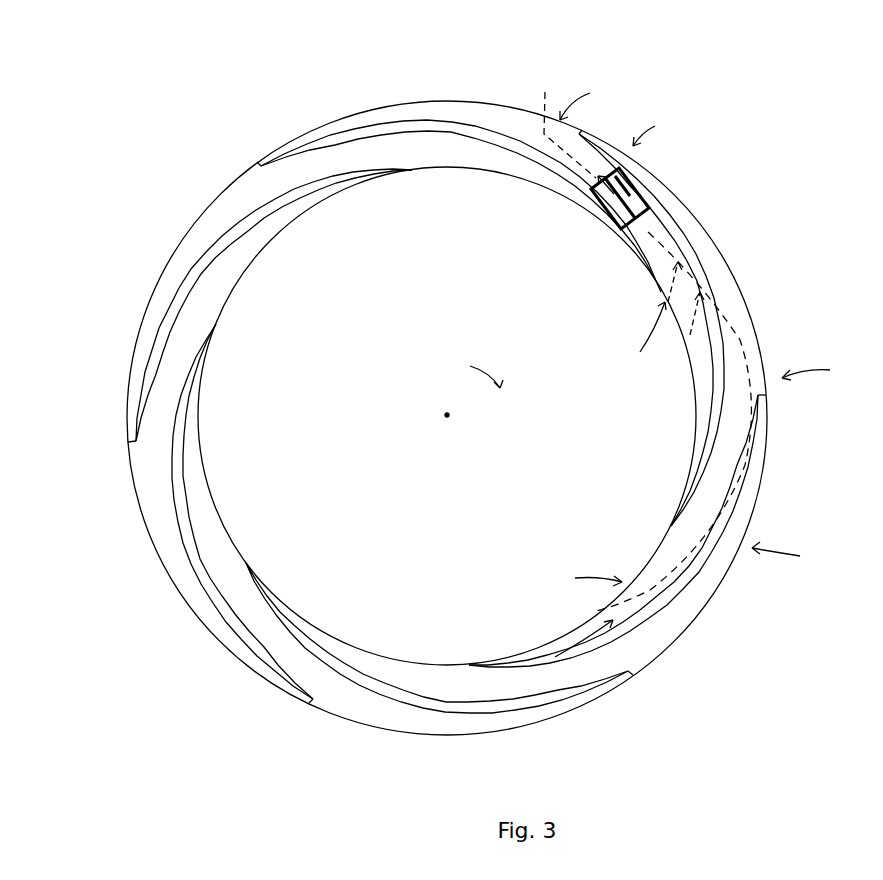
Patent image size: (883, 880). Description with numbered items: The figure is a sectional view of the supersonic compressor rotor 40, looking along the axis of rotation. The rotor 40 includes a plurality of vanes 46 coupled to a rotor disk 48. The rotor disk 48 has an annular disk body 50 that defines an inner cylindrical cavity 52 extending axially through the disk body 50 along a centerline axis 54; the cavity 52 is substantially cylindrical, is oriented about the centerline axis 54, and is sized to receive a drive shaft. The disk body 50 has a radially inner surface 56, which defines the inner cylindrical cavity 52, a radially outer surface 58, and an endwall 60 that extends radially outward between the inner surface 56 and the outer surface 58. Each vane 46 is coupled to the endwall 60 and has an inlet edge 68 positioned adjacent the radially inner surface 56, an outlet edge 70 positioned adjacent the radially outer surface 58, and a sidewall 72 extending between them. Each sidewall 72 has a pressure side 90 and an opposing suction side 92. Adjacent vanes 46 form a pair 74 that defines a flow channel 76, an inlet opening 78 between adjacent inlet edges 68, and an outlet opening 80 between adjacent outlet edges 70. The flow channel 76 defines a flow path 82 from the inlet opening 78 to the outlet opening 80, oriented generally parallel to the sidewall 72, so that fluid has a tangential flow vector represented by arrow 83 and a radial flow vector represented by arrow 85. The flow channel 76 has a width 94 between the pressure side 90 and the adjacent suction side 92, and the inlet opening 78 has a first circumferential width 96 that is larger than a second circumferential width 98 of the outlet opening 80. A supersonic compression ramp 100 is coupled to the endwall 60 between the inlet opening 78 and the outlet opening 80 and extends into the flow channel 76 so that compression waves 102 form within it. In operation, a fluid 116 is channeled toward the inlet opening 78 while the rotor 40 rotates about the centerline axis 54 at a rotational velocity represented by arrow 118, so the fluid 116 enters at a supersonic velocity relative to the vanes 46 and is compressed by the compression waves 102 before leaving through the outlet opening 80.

The supersonic compressor rotor 40 is at (625, 66).
The vane 46 is at (306, 143).
The rotor disk 48 is at (395, 722).
The annular disk body 50 is at (478, 720).
The inner cylindrical cavity 52 is at (432, 527).
The centerline axis 54 is at (452, 414).
The radially inner surface 56 is at (393, 660).
The radially outer surface 58 is at (340, 715).
The endwall 60 is at (338, 700).
The inlet edge 68 is at (248, 565).
The outlet edge 70 is at (261, 166).
The sidewall 72 is at (360, 130).
The pair of vanes 74 is at (729, 336).
The flow channel 76 is at (703, 400).
The inlet opening 78 is at (603, 445).
The outlet opening 80 is at (708, 226).
The flow path 82 is at (815, 333).
The tangential flow vector arrow 83 is at (615, 398).
The radial flow vector arrow 85 is at (700, 300).
The pressure side 90 is at (414, 106).
The suction side 92 is at (418, 167).
The width of flow channel 94 is at (690, 206).
The first circumferential width 96 is at (720, 240).
The second circumferential width 98 is at (556, 162).
The supersonic compression ramp 100 is at (594, 200).
The compression wave 102 is at (622, 240).
The fluid 116 is at (650, 170).
The rotational velocity arrow 118 is at (492, 364).